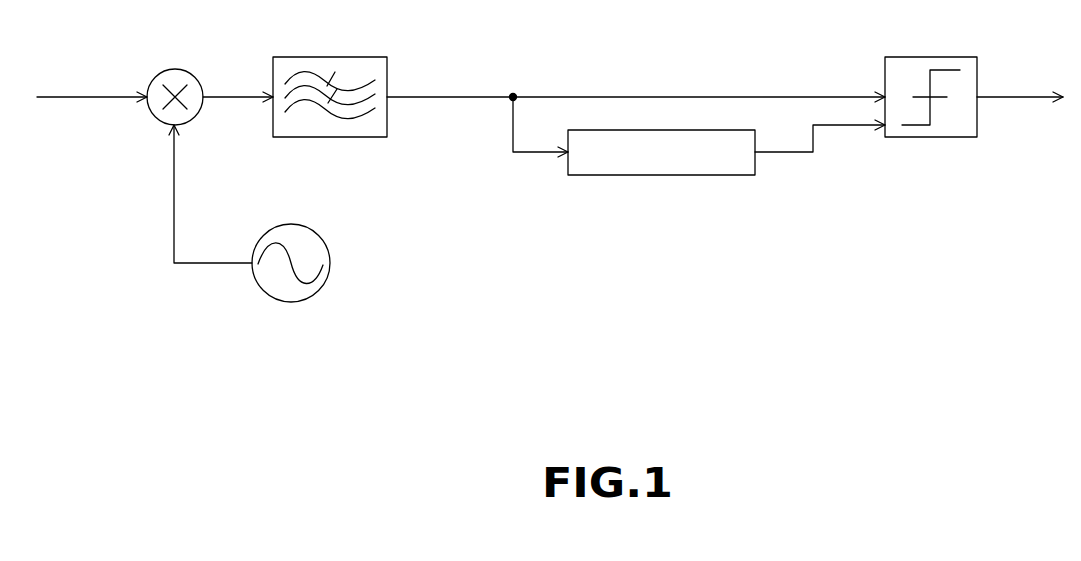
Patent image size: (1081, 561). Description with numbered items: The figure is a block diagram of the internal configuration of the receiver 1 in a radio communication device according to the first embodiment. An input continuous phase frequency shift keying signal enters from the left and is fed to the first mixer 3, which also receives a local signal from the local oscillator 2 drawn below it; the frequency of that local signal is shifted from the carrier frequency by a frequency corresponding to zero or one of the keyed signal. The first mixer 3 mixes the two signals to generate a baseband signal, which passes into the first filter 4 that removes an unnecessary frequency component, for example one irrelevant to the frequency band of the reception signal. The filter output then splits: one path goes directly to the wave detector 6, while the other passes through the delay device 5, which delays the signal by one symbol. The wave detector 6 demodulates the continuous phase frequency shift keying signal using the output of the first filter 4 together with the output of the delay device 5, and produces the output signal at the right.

The receiver 1 is at (550, 202).
The local oscillator 2 is at (302, 223).
The first mixer 3 is at (178, 68).
The first filter 4 is at (325, 57).
The delay device 5 is at (653, 177).
The wave detector 6 is at (942, 57).